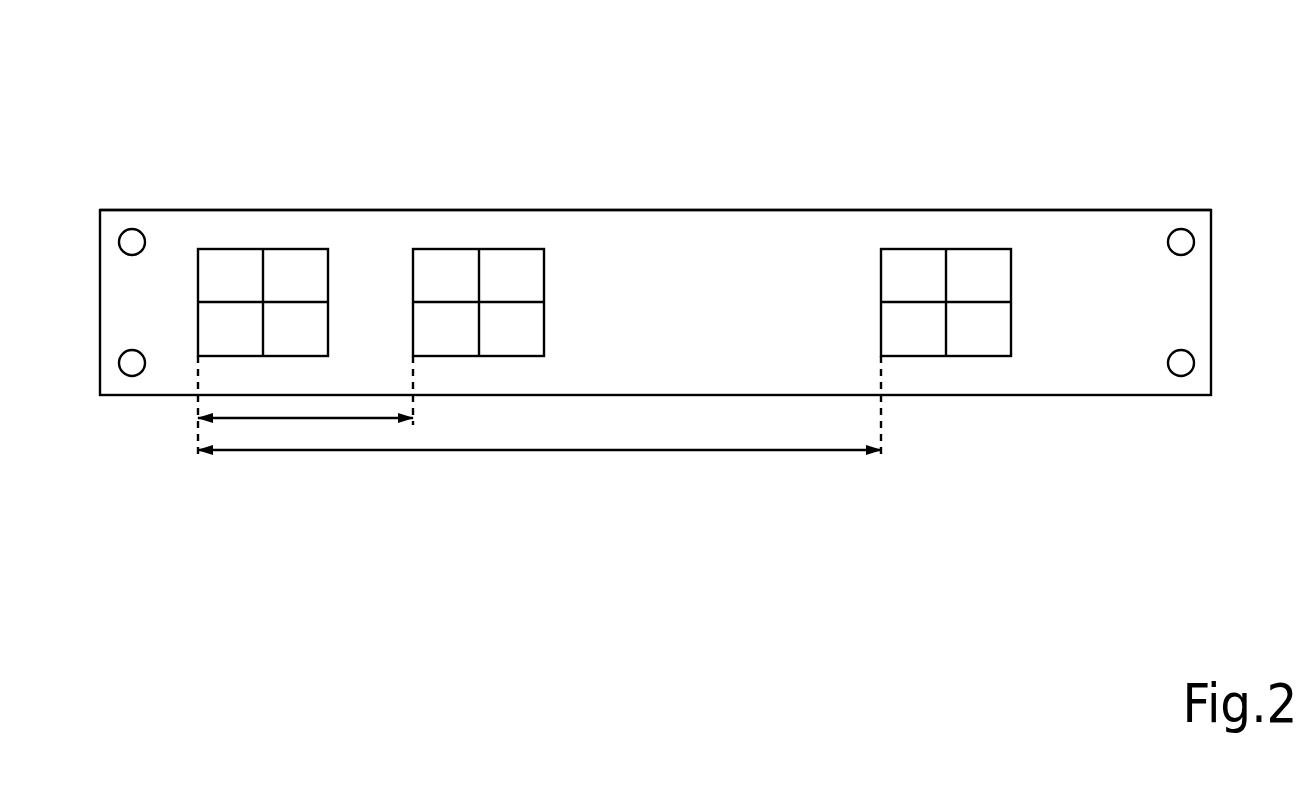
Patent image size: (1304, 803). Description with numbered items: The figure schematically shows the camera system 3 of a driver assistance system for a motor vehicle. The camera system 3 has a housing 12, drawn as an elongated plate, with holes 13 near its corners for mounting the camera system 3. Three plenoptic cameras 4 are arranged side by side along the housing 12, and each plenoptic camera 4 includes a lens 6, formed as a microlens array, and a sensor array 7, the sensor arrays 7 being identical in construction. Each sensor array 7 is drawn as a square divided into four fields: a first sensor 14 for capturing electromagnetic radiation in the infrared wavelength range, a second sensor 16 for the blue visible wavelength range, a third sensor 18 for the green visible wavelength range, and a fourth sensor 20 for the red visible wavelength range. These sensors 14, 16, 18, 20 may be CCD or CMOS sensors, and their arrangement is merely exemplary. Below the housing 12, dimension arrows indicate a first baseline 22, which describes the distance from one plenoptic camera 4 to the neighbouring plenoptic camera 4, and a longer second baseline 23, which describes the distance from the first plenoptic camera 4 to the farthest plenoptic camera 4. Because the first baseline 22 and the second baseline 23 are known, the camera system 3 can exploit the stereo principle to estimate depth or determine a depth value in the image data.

The camera system 3 is at (207, 210).
The plenoptic camera 4 is at (299, 237).
The lens 6 is at (267, 237).
The sensor array 7 is at (332, 298).
The housing 12 is at (838, 210).
The holes 13 is at (132, 232).
The first sensor 14 is at (223, 268).
The second sensor 16 is at (313, 268).
The third sensor 18 is at (294, 342).
The fourth sensor 20 is at (215, 340).
The first baseline 22 is at (265, 418).
The second baseline 23 is at (745, 452).